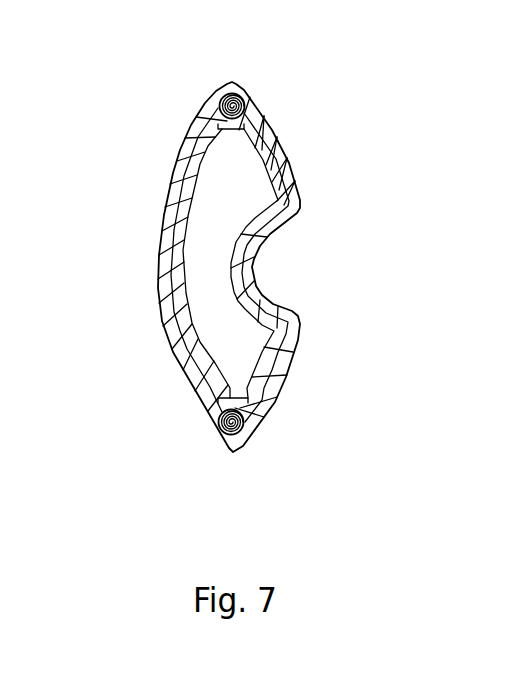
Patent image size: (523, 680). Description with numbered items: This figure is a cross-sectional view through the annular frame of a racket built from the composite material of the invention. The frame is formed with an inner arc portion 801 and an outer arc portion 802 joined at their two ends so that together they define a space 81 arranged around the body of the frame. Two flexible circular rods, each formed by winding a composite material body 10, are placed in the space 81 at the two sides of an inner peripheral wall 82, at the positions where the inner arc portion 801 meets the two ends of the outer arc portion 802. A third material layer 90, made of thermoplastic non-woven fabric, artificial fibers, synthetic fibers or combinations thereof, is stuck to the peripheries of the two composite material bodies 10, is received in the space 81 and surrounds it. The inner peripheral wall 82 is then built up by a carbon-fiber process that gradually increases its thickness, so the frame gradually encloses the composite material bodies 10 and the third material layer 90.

The composite material body 10 is at (238, 96).
The space 81 is at (258, 188).
The inner peripheral wall 82 is at (192, 312).
The third material layer 90 is at (170, 200).
The inner arc portion 801 is at (185, 135).
The outer arc portion 802 is at (277, 137).